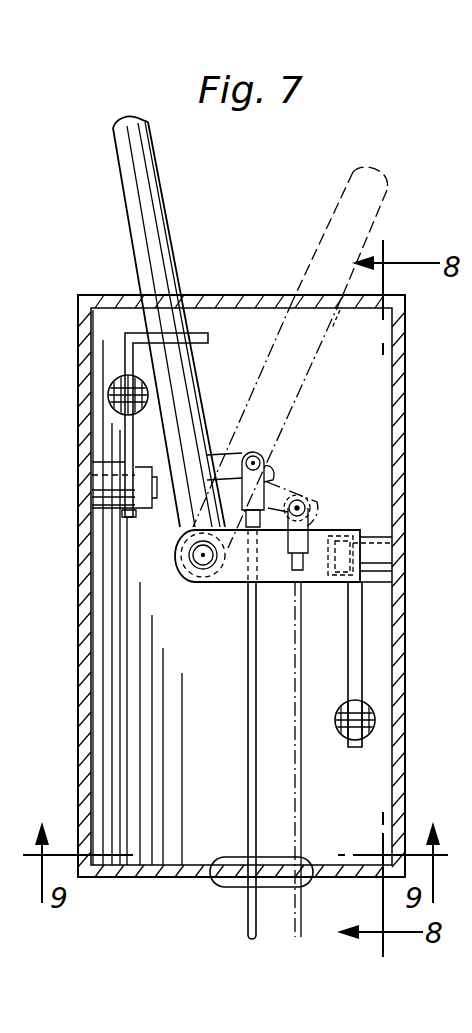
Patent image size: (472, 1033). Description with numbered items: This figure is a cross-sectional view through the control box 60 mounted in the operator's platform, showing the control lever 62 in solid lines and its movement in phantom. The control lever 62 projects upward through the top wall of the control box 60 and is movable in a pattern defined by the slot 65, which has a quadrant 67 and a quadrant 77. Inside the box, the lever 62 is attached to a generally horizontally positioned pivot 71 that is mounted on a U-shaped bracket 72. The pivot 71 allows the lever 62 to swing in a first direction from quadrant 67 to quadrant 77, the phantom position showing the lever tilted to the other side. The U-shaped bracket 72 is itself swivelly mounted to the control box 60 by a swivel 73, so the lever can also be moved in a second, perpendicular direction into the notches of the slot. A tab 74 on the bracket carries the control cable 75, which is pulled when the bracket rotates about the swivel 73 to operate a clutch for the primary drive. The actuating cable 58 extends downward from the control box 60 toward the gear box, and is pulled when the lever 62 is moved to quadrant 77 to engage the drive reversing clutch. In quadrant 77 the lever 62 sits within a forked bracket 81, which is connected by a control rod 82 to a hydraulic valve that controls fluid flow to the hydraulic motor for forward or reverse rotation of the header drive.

The cable 58 is at (248, 700).
The control box 60 is at (225, 295).
The control lever 62 is at (160, 197).
The slot 65 is at (270, 284).
The quadrant 67 is at (330, 340).
The pivot 71 is at (189, 553).
The U-shaped bracket 72 is at (228, 582).
The swivel 73 is at (370, 537).
The tab 74 is at (362, 660).
The control cable 75 is at (372, 704).
The quadrant 77 is at (132, 288).
The forked bracket 81 is at (197, 343).
The control rod 82 is at (148, 389).